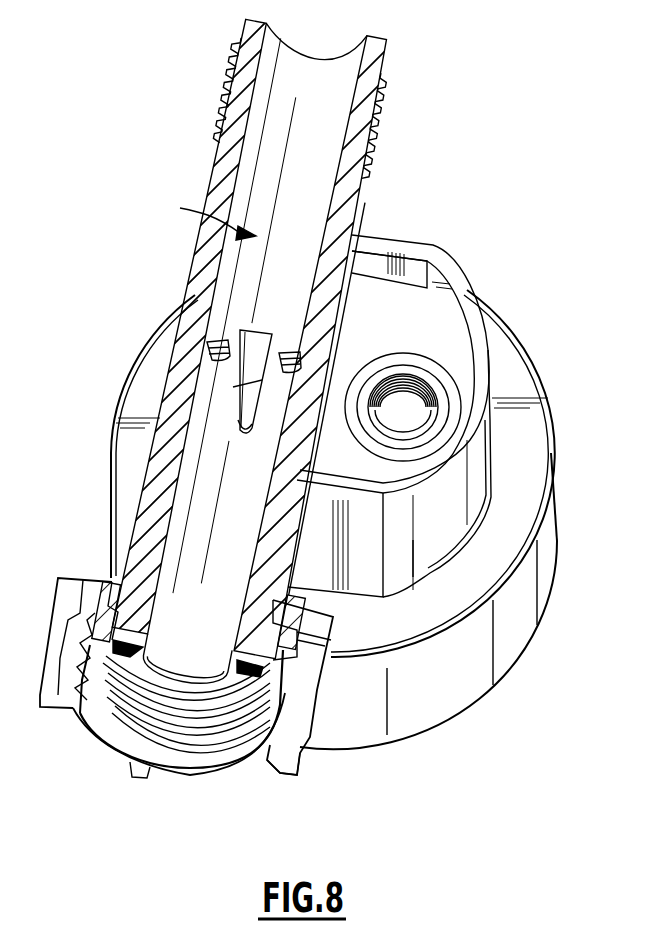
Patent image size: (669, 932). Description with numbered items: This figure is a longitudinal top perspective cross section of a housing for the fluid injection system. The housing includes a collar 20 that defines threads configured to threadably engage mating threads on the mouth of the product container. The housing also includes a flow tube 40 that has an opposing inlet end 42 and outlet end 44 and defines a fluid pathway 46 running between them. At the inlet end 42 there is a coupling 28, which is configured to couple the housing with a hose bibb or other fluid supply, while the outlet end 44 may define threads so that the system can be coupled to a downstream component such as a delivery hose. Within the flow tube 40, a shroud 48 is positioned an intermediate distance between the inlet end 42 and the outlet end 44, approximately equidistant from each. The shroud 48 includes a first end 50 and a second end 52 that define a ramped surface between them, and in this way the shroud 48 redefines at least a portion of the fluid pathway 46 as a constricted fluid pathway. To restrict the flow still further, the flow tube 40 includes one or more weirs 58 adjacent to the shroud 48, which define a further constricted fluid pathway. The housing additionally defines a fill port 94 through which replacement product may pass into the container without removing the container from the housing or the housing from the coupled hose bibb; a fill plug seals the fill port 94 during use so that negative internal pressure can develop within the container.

The collar 20 is at (522, 360).
The coupling 28 is at (293, 760).
The flow tube 40 is at (357, 196).
The inlet end 42 is at (112, 582).
The outlet end 44 is at (384, 52).
The fluid pathway 46 is at (204, 215).
The shroud 48 is at (247, 372).
The first end 50 is at (262, 428).
The second end 52 is at (258, 330).
The weir 58 is at (222, 340).
The fill port 94 is at (403, 393).